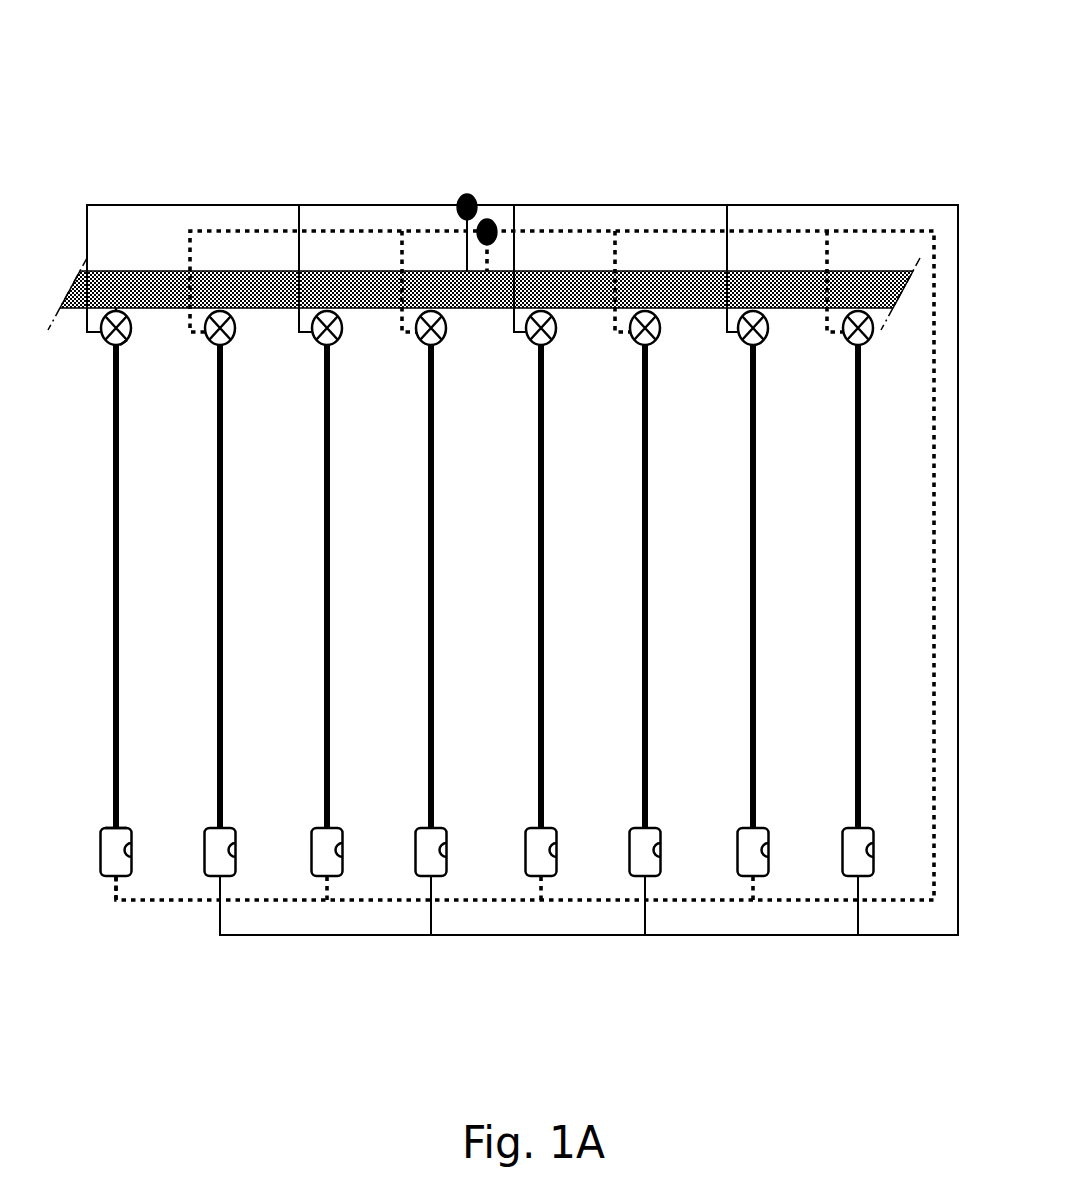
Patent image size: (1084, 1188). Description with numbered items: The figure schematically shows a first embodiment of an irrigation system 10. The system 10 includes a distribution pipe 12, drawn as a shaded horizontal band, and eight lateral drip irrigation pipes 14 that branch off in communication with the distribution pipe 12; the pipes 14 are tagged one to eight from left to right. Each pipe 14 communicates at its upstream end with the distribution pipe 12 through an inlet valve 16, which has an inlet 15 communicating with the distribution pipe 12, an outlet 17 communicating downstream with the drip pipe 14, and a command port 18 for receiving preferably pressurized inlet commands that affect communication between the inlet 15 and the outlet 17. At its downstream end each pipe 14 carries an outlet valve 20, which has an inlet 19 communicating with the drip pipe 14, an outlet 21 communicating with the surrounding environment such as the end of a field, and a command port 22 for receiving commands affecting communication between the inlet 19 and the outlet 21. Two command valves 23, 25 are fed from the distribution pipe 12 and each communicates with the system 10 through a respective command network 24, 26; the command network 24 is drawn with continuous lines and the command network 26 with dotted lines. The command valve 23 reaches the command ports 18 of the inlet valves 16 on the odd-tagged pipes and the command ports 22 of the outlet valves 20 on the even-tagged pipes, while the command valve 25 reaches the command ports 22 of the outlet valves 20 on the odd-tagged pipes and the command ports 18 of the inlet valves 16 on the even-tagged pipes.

The irrigation system 10 is at (499, 475).
The distribution pipe 12 is at (77, 293).
The lateral drip irrigation pipe 14 is at (113, 497).
The inlet 15 is at (123, 295).
The inlet valve 16 is at (106, 352).
The outlet 17 is at (120, 346).
The command port 18 is at (100, 332).
The inlet 19 is at (119, 828).
The outlet valve 20 is at (97, 845).
The outlet 21 is at (134, 851).
The command port 22 is at (112, 888).
The command valve 23 is at (465, 196).
The command network 24 is at (270, 205).
The command valve 25 is at (486, 220).
The command network 26 is at (368, 231).